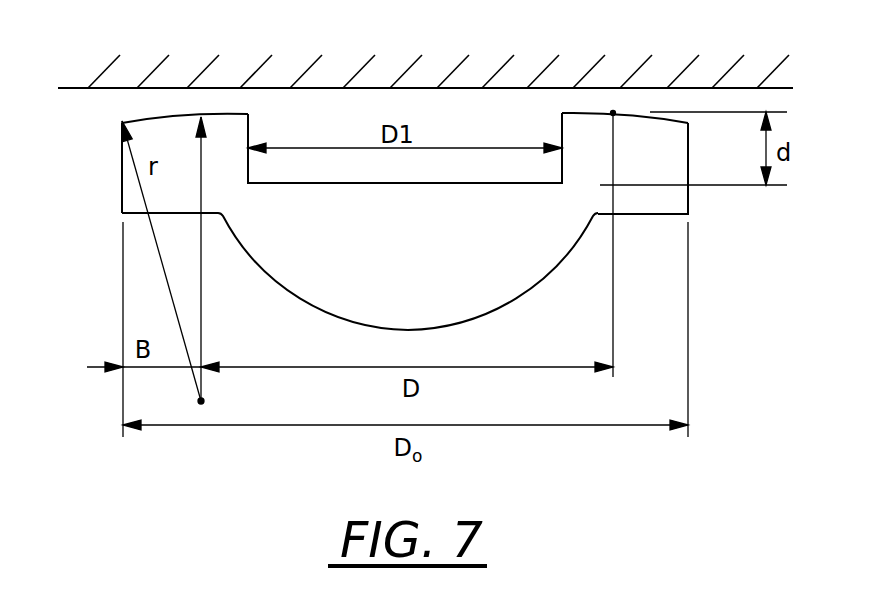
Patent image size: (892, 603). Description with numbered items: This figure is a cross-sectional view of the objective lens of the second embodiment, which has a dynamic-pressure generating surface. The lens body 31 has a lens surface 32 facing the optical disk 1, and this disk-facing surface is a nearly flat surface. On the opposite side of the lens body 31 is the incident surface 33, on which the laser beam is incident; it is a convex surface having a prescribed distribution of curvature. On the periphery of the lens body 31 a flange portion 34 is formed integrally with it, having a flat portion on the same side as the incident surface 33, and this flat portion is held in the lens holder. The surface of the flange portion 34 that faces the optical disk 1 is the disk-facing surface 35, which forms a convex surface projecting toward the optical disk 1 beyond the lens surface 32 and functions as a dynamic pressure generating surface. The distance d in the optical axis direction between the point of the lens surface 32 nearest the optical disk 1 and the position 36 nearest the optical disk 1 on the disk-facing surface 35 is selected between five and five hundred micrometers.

The optical disk 1 is at (80, 90).
The lens body 31 is at (507, 287).
The lens surface 32 is at (485, 181).
The incident surface 33 is at (293, 295).
The flange portion 34 is at (668, 172).
The disk-facing surface 35 is at (678, 118).
The position nearest the optical disk 36 is at (613, 113).